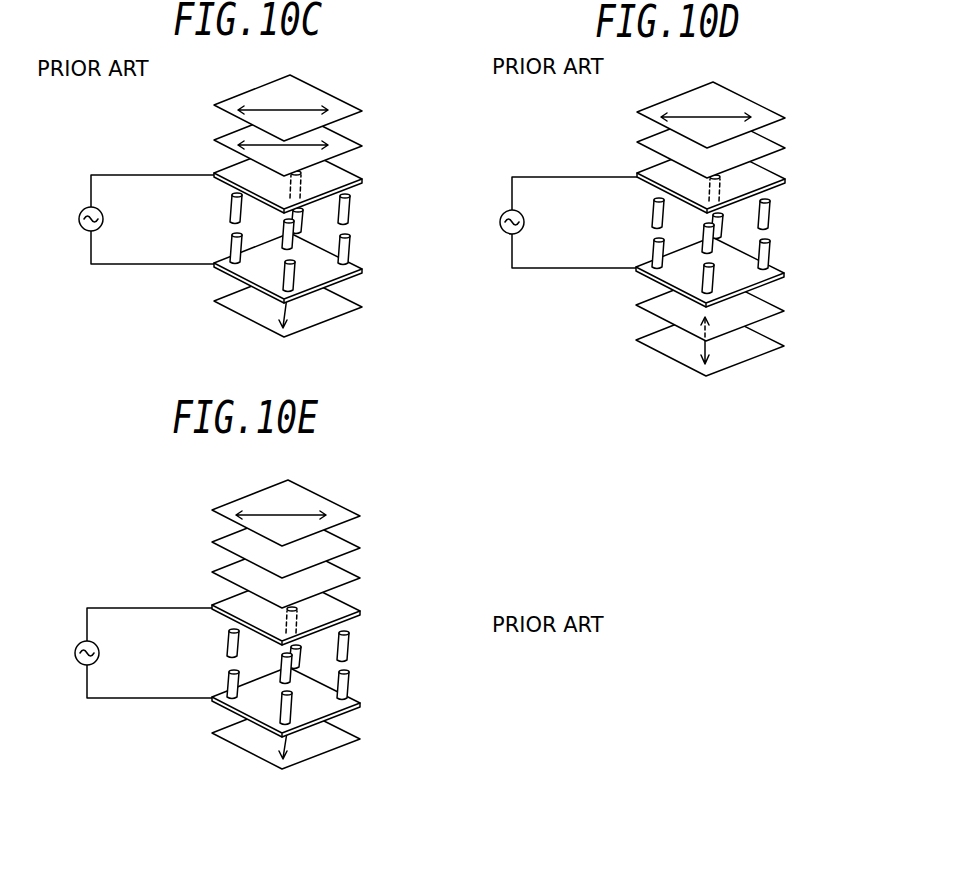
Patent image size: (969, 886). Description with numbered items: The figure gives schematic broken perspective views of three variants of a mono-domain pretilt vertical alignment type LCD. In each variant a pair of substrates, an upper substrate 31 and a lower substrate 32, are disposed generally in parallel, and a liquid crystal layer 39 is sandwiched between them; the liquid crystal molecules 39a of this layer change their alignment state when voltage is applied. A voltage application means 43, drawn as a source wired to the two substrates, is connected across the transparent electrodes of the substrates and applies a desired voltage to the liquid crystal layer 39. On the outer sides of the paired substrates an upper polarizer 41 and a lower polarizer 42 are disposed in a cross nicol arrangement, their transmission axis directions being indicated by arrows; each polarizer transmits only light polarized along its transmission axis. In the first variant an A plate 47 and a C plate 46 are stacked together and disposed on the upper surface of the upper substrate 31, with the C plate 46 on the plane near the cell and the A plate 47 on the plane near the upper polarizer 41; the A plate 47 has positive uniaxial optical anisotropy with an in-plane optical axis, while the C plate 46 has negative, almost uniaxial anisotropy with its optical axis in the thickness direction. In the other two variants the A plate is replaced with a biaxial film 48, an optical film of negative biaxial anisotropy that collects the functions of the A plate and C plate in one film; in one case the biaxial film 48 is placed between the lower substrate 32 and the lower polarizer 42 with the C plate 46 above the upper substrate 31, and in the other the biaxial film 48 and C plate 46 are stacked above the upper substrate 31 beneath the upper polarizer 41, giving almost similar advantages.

In FIG. 10C, the upper substrate 31 is at (363, 179).
In FIG. 10D, the upper substrate 31 is at (786, 179).
In FIG. 10E, the upper substrate 31 is at (361, 611).
In FIG. 10C, the lower substrate 32 is at (363, 269).
In FIG. 10D, the lower substrate 32 is at (785, 273).
In FIG. 10E, the lower substrate 32 is at (361, 703).
In FIG. 10C, the liquid crystal layer 39 is at (287, 236).
In FIG. 10D, the liquid crystal layer 39 is at (708, 239).
In FIG. 10E, the liquid crystal layer 39 is at (285, 670).
In FIG. 10C, the liquid crystal molecules 39a is at (229, 208).
In FIG. 10D, the liquid crystal molecules 39a is at (650, 212).
In FIG. 10E, the liquid crystal molecules 39a is at (225, 645).
In FIG. 10C, the upper polarizer 41 is at (363, 111).
In FIG. 10D, the upper polarizer 41 is at (786, 118).
In FIG. 10E, the upper polarizer 41 is at (361, 516).
In FIG. 10C, the lower polarizer 42 is at (363, 307).
In FIG. 10D, the lower polarizer 42 is at (785, 346).
In FIG. 10E, the lower polarizer 42 is at (361, 739).
In FIG. 10C, the voltage application means 43 is at (103, 223).
In FIG. 10D, the voltage application means 43 is at (524, 226).
In FIG. 10E, the voltage application means 43 is at (99, 657).
In FIG. 10D, the C plate 46 is at (786, 148).
In FIG. 10E, the C plate 46 is at (361, 578).
In FIG. 10C, the A plate 47 is at (363, 146).
In FIG. 10D, the biaxial film 48 is at (785, 311).
In FIG. 10E, the biaxial film 48 is at (361, 548).